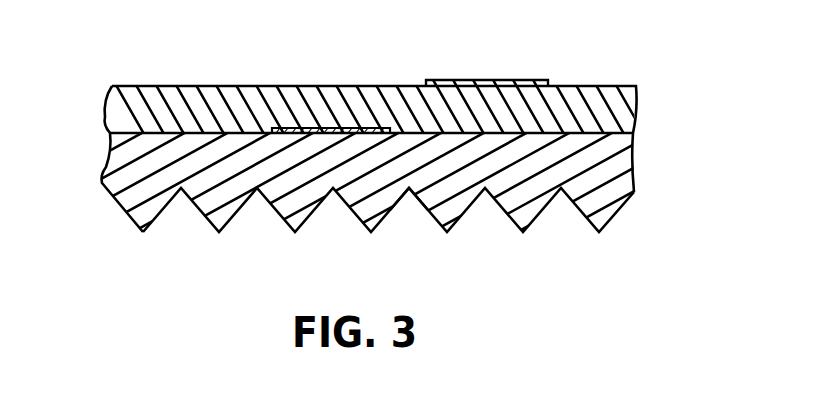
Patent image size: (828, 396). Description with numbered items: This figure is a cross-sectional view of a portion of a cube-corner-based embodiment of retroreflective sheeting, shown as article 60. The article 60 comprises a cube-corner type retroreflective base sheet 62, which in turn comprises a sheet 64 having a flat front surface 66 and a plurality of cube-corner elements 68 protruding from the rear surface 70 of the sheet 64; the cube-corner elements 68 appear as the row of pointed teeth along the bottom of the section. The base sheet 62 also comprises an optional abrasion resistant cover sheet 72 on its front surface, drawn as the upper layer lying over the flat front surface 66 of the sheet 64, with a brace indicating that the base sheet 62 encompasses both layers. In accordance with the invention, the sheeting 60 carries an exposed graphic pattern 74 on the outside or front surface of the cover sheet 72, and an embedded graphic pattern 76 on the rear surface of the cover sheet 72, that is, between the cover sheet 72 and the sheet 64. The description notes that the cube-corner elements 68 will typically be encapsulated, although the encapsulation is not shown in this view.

The article 60 is at (592, 58).
The cube-corner type retroreflective base sheet 62 is at (95, 81).
The sheet 64 is at (603, 159).
The flat front surface 66 is at (555, 132).
The cube-corner elements 68 is at (590, 205).
The rear surface 70 is at (417, 199).
The abrasion resistant cover sheet 72 is at (165, 105).
The exposed graphic pattern 74 is at (455, 80).
The embedded graphic pattern 76 is at (322, 128).